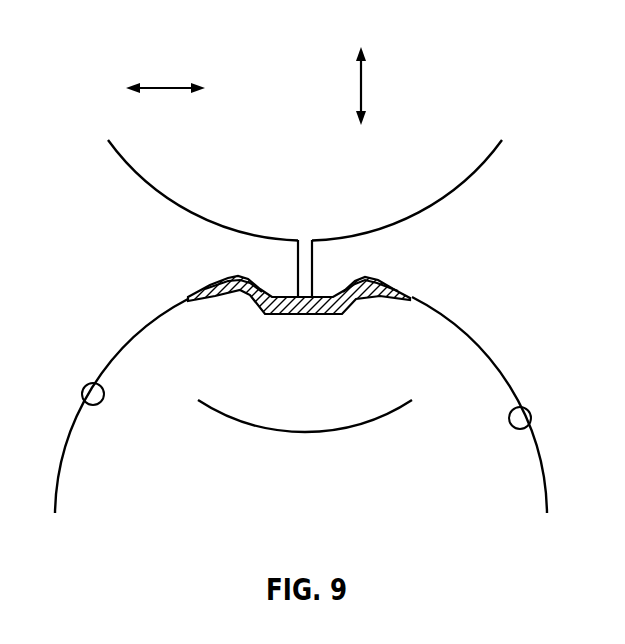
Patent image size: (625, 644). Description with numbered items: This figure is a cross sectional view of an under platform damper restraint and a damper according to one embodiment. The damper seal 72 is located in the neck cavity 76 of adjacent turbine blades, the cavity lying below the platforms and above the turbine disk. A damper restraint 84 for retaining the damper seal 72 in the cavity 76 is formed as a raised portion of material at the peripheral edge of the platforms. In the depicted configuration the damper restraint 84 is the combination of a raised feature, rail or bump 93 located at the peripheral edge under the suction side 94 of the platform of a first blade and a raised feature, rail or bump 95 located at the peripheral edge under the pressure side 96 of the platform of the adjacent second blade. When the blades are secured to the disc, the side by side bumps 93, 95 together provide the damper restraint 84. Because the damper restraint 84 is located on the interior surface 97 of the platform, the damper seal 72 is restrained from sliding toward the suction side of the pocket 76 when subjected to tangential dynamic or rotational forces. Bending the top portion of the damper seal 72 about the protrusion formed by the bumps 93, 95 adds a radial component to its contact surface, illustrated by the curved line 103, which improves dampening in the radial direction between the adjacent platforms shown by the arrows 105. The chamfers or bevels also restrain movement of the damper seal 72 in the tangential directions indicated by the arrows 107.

The arrows indicating tangential direction 107 is at (163, 87).
The arrows indicating radial direction 105 is at (364, 84).
The pressure side 96 is at (147, 181).
The suction side 94 is at (457, 186).
The raised feature, rail or bump 95 is at (289, 278).
The raised feature, rail or bump 93 is at (321, 278).
The damper restraint 84 is at (305, 313).
The damper seal 72 is at (318, 333).
The interior surface 97 is at (82, 403).
The neck cavity 76 is at (187, 485).
The curved line 103 is at (300, 433).